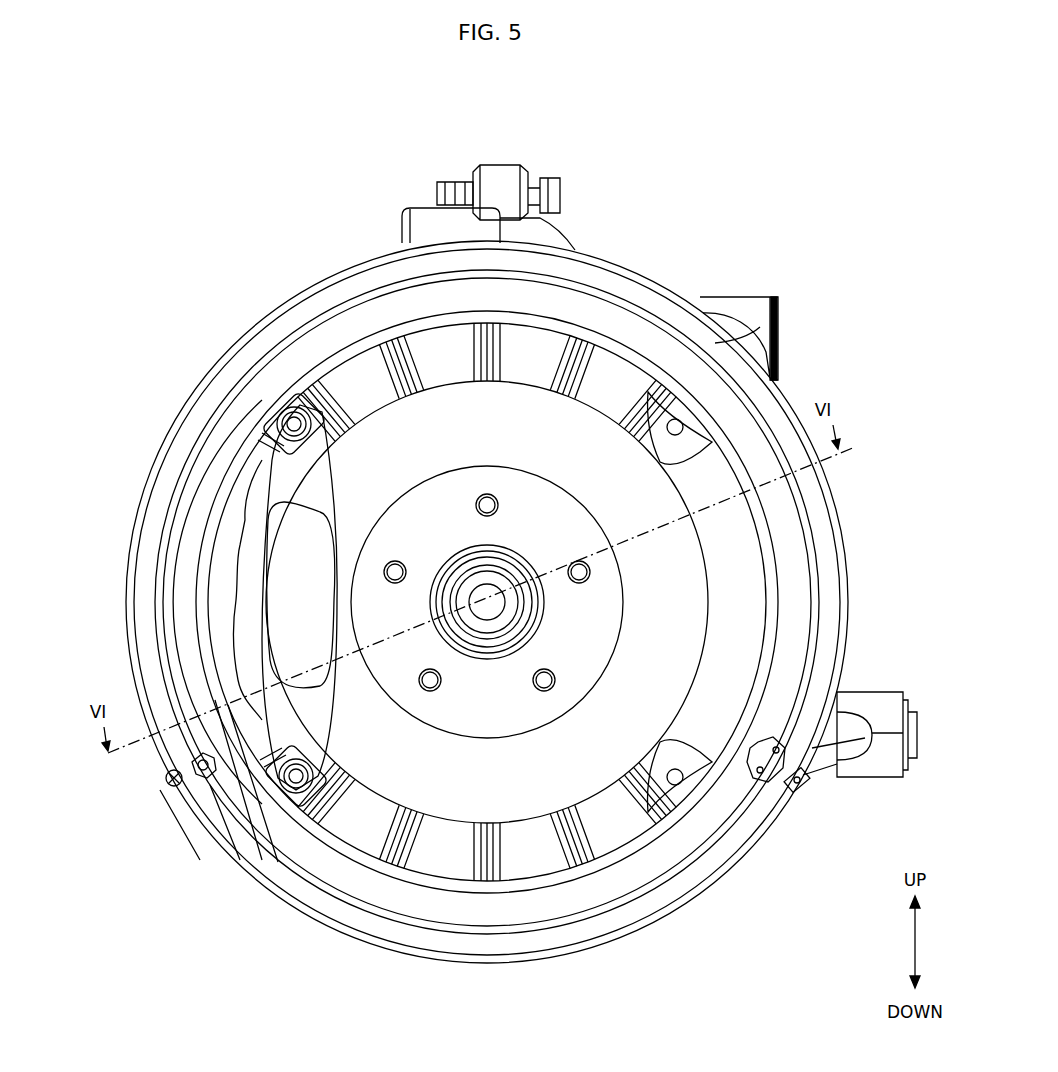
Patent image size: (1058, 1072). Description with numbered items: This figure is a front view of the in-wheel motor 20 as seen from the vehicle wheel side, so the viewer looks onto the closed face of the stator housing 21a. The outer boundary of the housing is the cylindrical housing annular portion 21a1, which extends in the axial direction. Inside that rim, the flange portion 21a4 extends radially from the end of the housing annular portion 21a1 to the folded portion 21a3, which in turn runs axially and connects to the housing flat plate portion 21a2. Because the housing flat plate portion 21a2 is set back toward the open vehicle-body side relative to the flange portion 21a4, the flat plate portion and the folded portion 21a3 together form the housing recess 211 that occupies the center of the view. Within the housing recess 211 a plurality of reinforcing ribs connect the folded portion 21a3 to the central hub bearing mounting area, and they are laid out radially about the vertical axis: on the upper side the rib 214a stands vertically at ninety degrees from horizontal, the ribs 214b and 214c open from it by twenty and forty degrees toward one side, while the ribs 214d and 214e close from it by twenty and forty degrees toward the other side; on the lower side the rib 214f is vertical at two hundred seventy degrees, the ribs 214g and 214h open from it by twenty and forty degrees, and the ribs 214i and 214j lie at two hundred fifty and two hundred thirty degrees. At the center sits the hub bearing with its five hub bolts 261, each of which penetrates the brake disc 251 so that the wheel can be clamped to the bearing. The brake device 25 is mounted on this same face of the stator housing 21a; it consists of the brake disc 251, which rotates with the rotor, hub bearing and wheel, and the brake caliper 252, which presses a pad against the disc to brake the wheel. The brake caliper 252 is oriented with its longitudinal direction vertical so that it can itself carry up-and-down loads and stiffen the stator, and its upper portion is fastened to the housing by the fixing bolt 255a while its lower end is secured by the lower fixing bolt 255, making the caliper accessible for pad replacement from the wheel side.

The in-wheel motor 20 is at (682, 178).
The stator housing 21a is at (792, 398).
The housing annular portion 21a1 is at (318, 278).
The housing flat plate portion 21a2 is at (726, 631).
The folded portion 21a3 is at (776, 586).
The flange portion 21a4 is at (716, 342).
The housing recess 211 is at (731, 672).
The rib 214a is at (472, 326).
The rib 214b is at (397, 345).
The rib 214c is at (297, 404).
The rib 214d is at (582, 342).
The rib 214e is at (664, 390).
The rib 214f is at (490, 878).
The rib 214g is at (575, 857).
The rib 214h is at (652, 832).
The rib 214i is at (407, 850).
The rib 214j is at (326, 806).
The brake device 25 is at (236, 582).
The brake disc 251 is at (461, 780).
The brake caliper 252 is at (294, 490).
The caliper mounting bolt 255 is at (282, 780).
The fixing bolt 255a is at (287, 414).
The hub bolt 261 is at (590, 570).